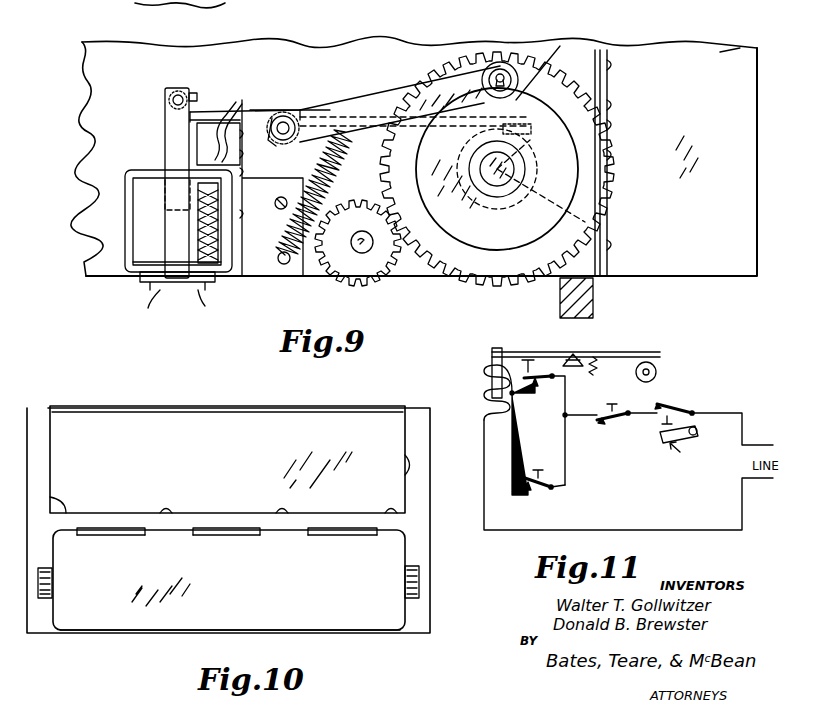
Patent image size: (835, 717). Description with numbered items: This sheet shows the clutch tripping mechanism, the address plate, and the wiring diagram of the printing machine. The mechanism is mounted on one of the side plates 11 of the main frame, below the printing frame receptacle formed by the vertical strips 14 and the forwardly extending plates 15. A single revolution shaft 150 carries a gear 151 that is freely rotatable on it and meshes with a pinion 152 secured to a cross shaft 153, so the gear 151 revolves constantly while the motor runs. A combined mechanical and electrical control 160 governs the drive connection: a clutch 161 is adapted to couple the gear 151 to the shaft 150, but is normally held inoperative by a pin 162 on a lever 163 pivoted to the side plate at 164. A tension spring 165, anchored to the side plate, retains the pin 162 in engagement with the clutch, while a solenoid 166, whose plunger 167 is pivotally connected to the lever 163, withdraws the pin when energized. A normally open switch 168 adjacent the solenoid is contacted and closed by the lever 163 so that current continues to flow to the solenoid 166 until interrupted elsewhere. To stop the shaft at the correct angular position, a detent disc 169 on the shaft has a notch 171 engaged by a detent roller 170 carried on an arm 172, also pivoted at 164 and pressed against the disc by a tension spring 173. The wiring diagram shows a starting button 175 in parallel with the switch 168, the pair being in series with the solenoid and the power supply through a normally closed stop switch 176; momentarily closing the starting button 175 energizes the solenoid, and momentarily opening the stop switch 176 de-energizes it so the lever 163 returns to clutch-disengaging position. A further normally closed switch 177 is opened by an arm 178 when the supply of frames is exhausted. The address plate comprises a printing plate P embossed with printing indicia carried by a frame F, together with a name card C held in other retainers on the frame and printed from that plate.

In FIG. 9, the side plates 11 is at (85, 92).
In FIG. 9, the vertical strips 14 is at (200, 6).
In FIG. 9, the forwardly extending plates 15 is at (724, 68).
In FIG. 9, the single revolution shaft 150 is at (510, 166).
In FIG. 9, the gear 151 is at (582, 120).
In FIG. 9, the pinion 152 is at (374, 280).
In FIG. 9, the cross shaft 153 is at (362, 254).
In FIG. 9, the combined mechanical and electrical control 160 is at (356, 72).
In FIG. 9, the clutch 161 is at (598, 218).
In FIG. 11, the clutch 161 is at (658, 368).
In FIG. 9, the pin 162 is at (512, 127).
In FIG. 9, the lever 163 is at (268, 110).
In FIG. 11, the lever 163 is at (622, 354).
In FIG. 9, the pivot 164 is at (285, 126).
In FIG. 9, the tension spring 165 is at (296, 210).
In FIG. 9, the solenoid 166 is at (150, 180).
In FIG. 11, the solenoid 166 is at (486, 396).
In FIG. 9, the plunger 167 is at (165, 112).
In FIG. 11, the plunger 167 is at (492, 362).
In FIG. 9, the normally open switch 168 is at (208, 125).
In FIG. 11, the normally open switch 168 is at (540, 370).
In FIG. 9, the detent disc 169 is at (487, 238).
In FIG. 9, the detent roller 170 is at (520, 70).
In FIG. 9, the notch 171 is at (544, 63).
In FIG. 9, the arm 172 is at (388, 96).
In FIG. 9, the tension spring 173 is at (340, 168).
In FIG. 11, the starting button 175 is at (538, 492).
In FIG. 11, the stop switch 176 is at (606, 426).
In FIG. 11, the normally closed switch 177 is at (682, 396).
In FIG. 11, the arm 178 is at (694, 440).
In FIG. 10, the name card C is at (238, 424).
In FIG. 10, the frame F is at (420, 548).
In FIG. 10, the printing plate P is at (358, 618).